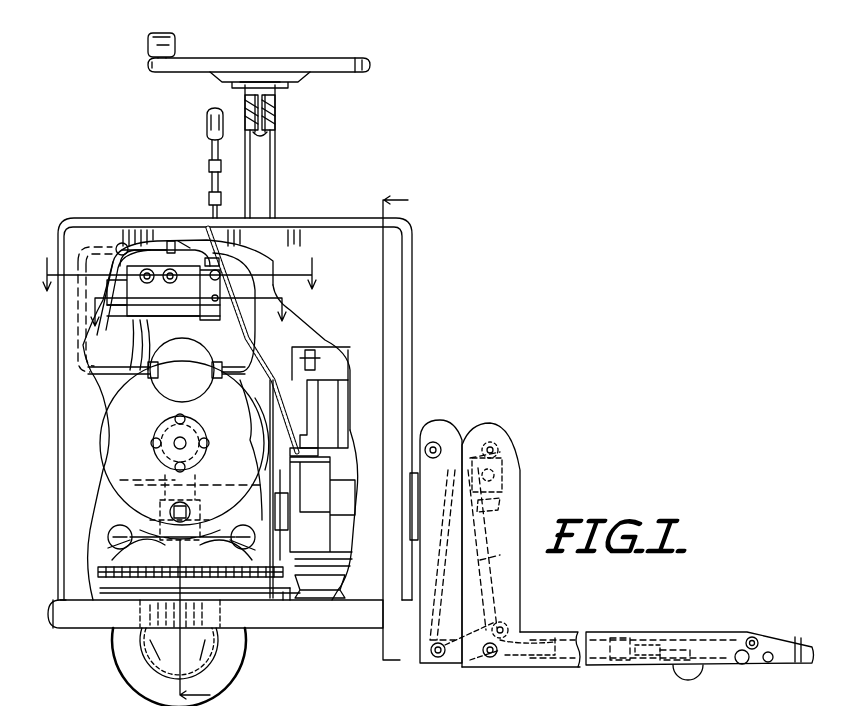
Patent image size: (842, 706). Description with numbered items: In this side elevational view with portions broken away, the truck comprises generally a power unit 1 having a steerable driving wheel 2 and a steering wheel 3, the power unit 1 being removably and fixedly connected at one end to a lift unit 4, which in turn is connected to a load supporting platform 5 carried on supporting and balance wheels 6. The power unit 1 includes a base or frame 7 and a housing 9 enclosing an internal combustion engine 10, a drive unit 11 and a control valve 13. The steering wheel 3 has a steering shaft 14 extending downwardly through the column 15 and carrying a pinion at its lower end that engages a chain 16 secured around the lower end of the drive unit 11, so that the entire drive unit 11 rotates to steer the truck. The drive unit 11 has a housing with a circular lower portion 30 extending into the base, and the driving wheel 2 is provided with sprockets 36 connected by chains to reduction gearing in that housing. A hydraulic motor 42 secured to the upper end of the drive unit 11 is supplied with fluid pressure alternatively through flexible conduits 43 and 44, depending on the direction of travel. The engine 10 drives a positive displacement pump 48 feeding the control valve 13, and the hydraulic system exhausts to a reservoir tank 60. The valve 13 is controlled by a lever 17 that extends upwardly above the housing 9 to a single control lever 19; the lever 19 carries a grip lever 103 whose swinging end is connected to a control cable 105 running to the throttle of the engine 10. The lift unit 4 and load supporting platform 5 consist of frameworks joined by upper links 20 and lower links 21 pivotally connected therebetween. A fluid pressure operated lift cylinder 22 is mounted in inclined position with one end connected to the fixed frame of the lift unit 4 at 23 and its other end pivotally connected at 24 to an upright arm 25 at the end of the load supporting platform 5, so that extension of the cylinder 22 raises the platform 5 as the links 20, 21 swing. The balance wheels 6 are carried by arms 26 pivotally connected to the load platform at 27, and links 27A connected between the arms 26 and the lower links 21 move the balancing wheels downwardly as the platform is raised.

The power unit 1 is at (333, 218).
The steerable driving wheel 2 is at (148, 668).
The steering wheel 3 is at (335, 63).
The lift unit 4 is at (446, 424).
The load supporting platform 5 is at (700, 630).
The supporting and balance wheels 6 is at (688, 676).
The base or frame 7 is at (308, 628).
The housing 9 is at (393, 298).
The internal combustion engine 10 is at (338, 542).
The drive unit 11 is at (140, 452).
The control valve 13 is at (192, 318).
The steering shaft 14 is at (263, 122).
The column 15 is at (268, 178).
The chain 16 is at (285, 595).
The lever 17 is at (212, 262).
The single control lever 19 is at (205, 118).
The upper links 20 is at (497, 435).
The lower links 21 is at (455, 668).
The fluid pressure operated lift cylinder 22 is at (486, 541).
The connection to fixed frame 23 is at (468, 588).
The pivotal connection 24 is at (502, 478).
The upright arm 25 is at (518, 498).
The arms 26 is at (765, 645).
The pivotal connection 27 is at (172, 665).
The links 27A is at (632, 656).
The circular lower portion 30 is at (108, 565).
The sprockets 36 is at (157, 637).
The hydraulic motor 42 is at (197, 392).
The flexible conduit 43 is at (198, 443).
The flexible conduit 44 is at (102, 388).
The positive displacement pump 48 is at (201, 491).
The reservoir tank 60 is at (325, 348).
The grip lever 103 is at (207, 134).
The control cable 105 is at (210, 180).